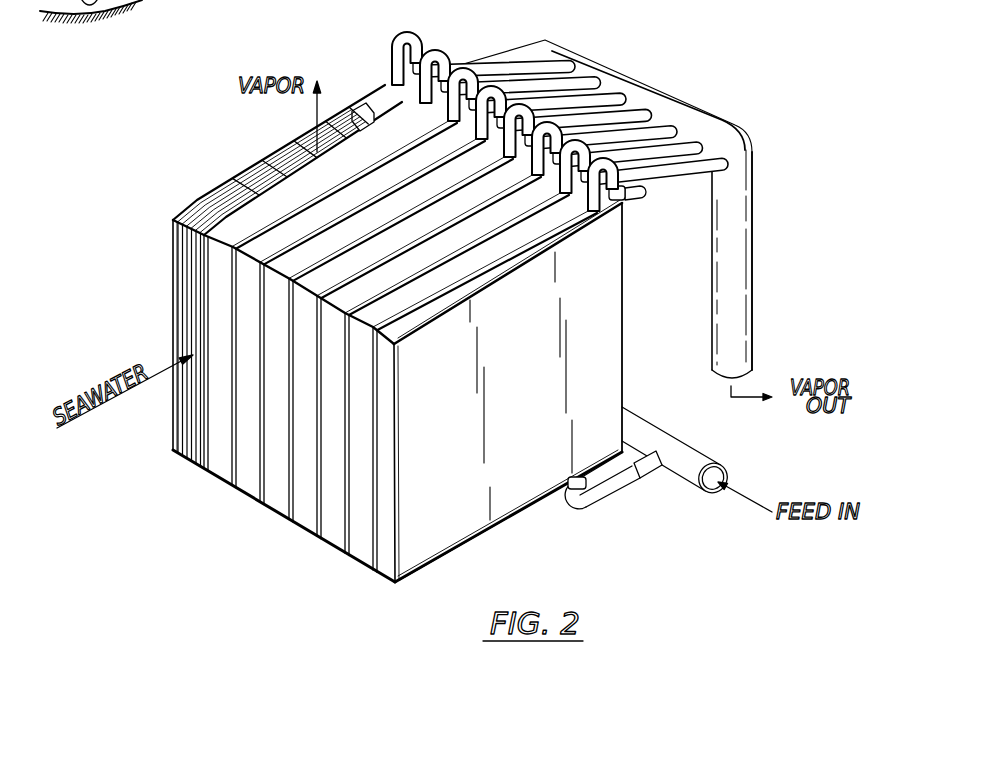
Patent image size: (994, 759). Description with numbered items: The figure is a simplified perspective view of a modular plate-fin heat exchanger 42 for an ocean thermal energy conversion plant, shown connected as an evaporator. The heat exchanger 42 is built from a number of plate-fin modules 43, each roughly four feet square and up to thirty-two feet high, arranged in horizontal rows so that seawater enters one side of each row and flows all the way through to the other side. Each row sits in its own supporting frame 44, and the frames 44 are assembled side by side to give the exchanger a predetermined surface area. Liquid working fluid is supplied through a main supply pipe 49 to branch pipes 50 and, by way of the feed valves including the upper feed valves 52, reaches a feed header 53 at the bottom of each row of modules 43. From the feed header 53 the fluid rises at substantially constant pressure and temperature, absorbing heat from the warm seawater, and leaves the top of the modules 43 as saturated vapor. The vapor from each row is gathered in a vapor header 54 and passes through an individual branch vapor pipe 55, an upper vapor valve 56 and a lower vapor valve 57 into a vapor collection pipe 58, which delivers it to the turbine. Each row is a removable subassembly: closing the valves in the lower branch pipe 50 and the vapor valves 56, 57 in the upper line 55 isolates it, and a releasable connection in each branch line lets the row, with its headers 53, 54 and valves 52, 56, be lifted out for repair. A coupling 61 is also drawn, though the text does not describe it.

The heat exchanger 42 is at (265, 136).
The plate-fin modules 43 is at (205, 208).
The supporting frames 44 is at (172, 221).
The main supply pipe 49 is at (703, 456).
The branch pipes 50 is at (616, 497).
The upper feed valves 52 is at (580, 500).
The feed header 53 is at (550, 500).
The vapor header 54 is at (381, 95).
The branch vapor pipe 55 is at (675, 178).
The upper vapor valve 56 is at (430, 42).
The lower vapor valve 57 is at (628, 197).
The vapor collection pipe 58 is at (656, 96).
The coupling 61 is at (655, 480).